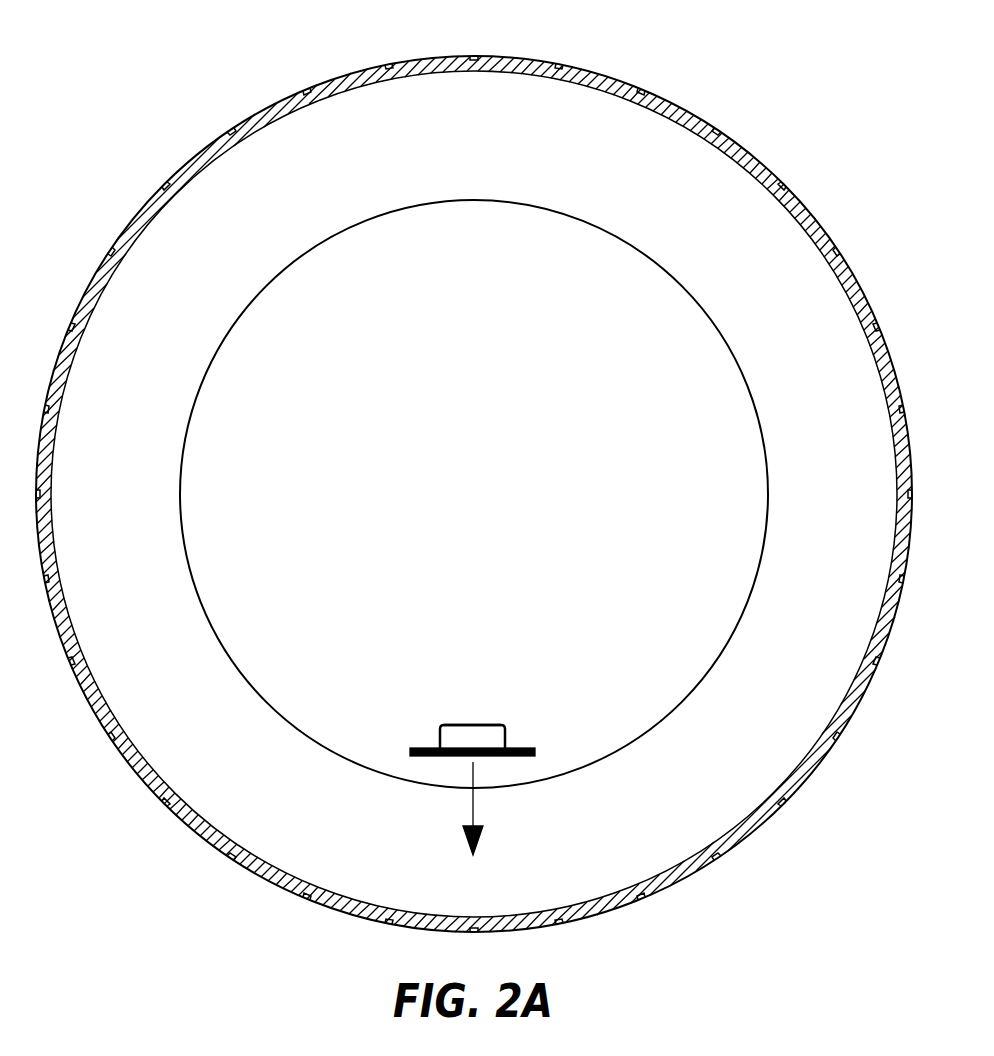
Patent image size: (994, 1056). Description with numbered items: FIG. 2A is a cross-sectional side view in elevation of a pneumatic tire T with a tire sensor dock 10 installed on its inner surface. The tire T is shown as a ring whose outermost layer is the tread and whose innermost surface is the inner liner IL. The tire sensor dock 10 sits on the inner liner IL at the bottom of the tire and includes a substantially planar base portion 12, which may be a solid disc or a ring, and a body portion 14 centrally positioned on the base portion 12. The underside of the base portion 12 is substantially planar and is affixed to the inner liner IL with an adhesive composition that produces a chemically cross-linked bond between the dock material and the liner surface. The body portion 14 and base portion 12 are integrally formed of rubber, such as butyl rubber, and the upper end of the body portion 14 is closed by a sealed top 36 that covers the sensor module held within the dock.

The tire T is at (276, 104).
The inner liner IL is at (653, 872).
The tire sensor dock 10 is at (447, 748).
The base portion 12 is at (418, 748).
The body portion 14 is at (441, 748).
The sealed top 36 is at (468, 722).